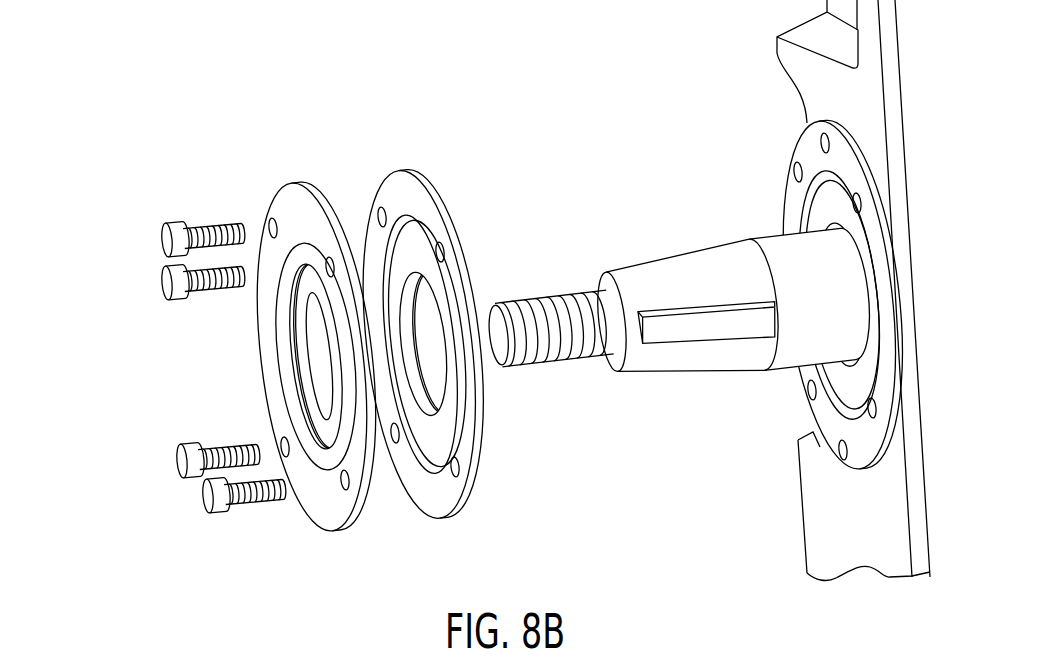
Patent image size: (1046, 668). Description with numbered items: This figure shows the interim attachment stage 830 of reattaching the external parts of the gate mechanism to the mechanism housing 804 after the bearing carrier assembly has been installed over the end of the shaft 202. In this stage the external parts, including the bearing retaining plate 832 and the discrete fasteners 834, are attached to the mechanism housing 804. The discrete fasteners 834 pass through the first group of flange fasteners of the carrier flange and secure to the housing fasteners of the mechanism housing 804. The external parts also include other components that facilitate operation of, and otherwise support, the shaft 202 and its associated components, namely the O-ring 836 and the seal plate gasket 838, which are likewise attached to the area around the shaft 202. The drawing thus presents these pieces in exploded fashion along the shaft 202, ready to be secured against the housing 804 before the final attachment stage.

The interim attachment stage 830 is at (430, 66).
The bearing retaining plate 832 is at (295, 181).
The discrete fasteners 834 is at (162, 282).
The O-ring 836 is at (437, 427).
The seal plate gasket 838 is at (403, 170).
The shaft 202 is at (672, 272).
The mechanism housing 804 is at (818, 80).